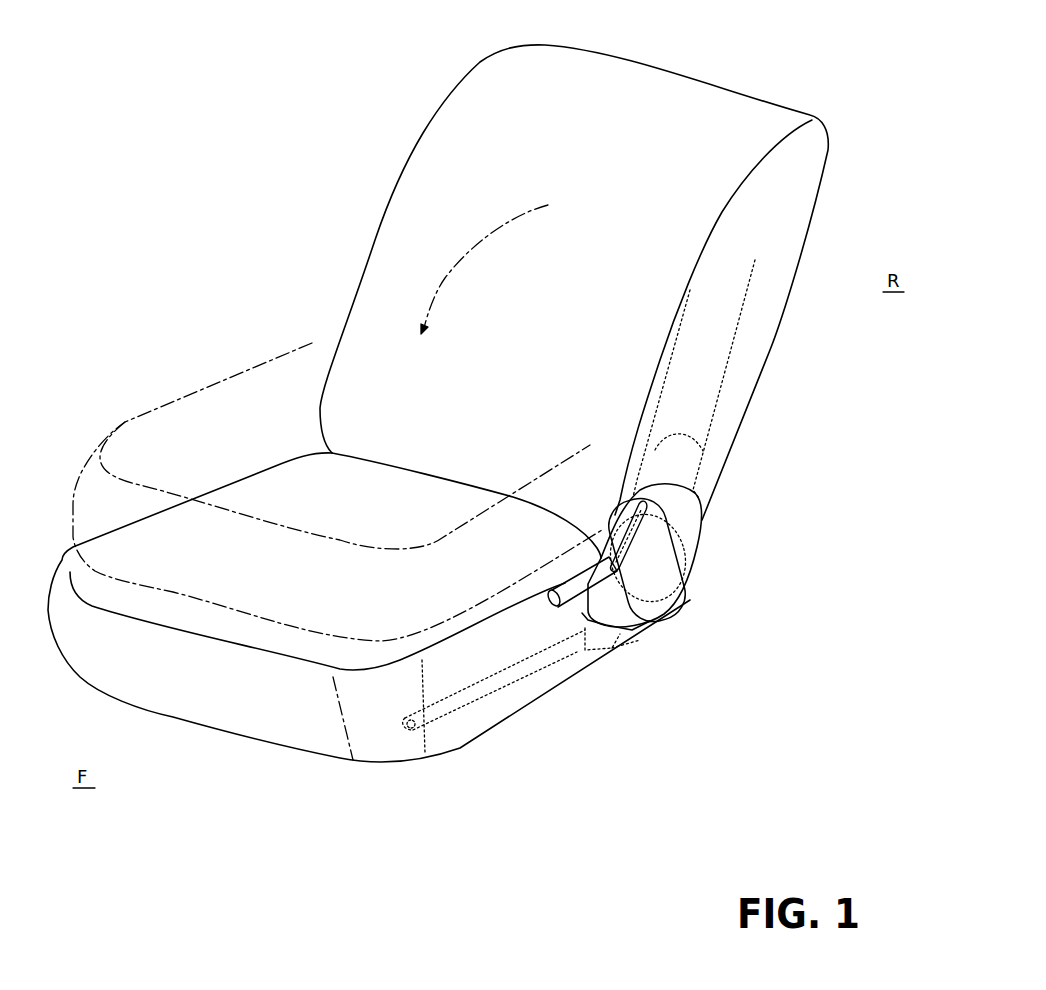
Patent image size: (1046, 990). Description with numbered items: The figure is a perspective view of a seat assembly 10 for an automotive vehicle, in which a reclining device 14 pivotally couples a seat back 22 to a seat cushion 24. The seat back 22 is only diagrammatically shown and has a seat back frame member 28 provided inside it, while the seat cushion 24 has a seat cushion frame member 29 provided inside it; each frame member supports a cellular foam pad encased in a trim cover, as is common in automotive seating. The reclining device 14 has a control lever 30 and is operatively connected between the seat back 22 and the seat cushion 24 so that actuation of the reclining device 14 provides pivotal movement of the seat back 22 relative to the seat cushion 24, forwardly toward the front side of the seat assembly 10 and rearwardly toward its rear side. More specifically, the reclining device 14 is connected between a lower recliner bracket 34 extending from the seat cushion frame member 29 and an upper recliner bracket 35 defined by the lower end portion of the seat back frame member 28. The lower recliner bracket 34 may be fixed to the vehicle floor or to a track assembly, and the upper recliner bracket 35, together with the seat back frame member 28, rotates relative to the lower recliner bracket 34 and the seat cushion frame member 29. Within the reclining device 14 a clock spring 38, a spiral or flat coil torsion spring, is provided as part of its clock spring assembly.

The seat assembly 10 is at (905, 166).
The reclining device 14 is at (687, 597).
The seat back 22 is at (438, 142).
The seat cushion 24 is at (498, 692).
The seat back frame member 28 is at (728, 363).
The seat cushion frame member 29 is at (408, 731).
The control lever 30 is at (552, 604).
The lower recliner bracket 34 is at (605, 637).
The upper recliner bracket 35 is at (687, 460).
The clock spring 38 is at (668, 542).